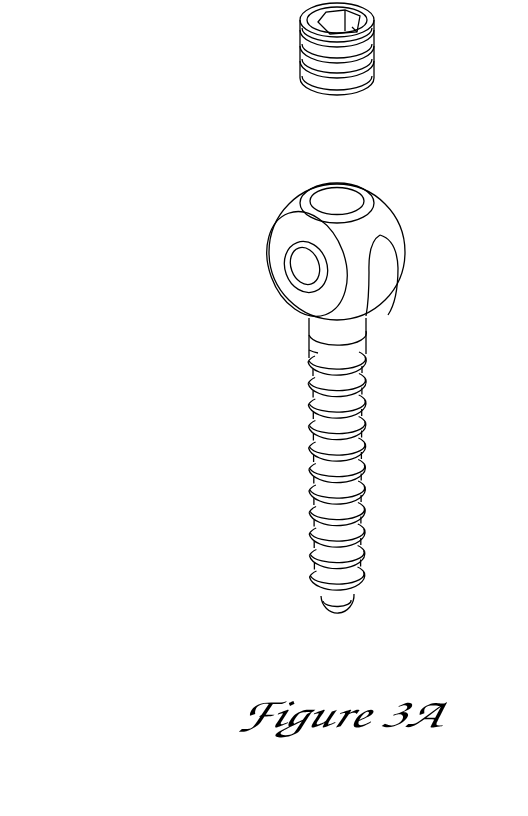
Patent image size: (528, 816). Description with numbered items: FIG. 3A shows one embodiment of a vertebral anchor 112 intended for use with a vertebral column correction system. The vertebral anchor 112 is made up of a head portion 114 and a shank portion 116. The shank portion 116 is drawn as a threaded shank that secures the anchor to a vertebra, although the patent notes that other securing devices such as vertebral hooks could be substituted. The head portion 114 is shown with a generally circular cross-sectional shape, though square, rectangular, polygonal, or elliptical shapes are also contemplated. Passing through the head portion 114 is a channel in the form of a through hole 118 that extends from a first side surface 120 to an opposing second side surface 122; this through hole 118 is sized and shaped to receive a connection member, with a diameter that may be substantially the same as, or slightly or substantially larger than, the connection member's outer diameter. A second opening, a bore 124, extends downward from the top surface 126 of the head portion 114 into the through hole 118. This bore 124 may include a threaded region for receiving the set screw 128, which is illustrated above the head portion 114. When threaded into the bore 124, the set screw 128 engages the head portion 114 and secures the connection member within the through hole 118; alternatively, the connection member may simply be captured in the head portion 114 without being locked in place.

The vertebral anchor 112 is at (175, 357).
The head portion 114 is at (349, 246).
The shank portion 116 is at (372, 452).
The through hole 118 is at (302, 261).
The first side surface 120 is at (300, 298).
The second side surface 122 is at (397, 218).
The bore 124 is at (343, 195).
The top surface 126 is at (310, 193).
The set screw 128 is at (300, 48).